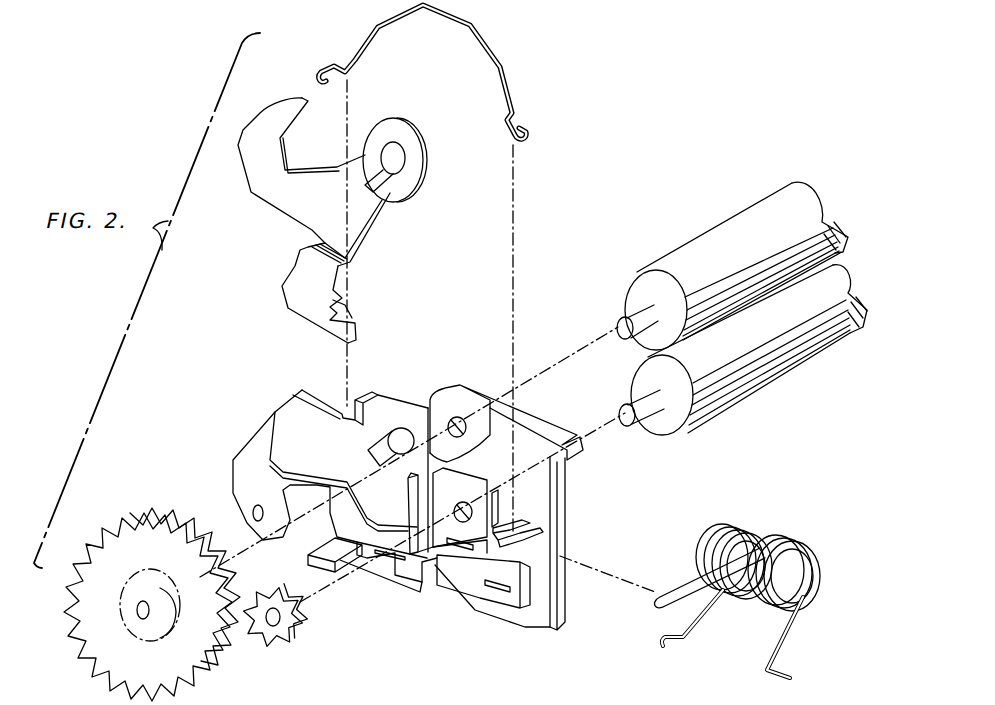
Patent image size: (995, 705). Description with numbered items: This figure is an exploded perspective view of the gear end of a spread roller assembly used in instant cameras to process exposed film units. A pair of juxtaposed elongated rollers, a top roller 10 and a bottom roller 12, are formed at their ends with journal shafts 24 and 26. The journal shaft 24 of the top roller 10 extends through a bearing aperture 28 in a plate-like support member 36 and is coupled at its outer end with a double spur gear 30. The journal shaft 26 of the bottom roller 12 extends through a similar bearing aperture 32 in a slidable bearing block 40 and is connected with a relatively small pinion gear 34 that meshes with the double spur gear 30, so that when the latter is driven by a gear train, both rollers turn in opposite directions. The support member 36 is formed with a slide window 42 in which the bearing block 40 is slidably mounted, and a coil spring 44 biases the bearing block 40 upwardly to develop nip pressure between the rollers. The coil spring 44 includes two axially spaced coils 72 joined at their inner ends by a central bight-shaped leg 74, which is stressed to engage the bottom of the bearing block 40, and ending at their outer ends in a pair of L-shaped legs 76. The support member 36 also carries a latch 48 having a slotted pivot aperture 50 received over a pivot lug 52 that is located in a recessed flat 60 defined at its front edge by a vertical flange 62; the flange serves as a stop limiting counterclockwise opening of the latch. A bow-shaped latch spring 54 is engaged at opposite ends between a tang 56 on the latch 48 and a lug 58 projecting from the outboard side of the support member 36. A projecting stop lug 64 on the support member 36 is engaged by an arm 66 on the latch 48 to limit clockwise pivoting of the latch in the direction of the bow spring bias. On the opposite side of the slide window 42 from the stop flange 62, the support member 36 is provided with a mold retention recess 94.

The top roller 10 is at (750, 230).
The bottom roller 12 is at (755, 385).
The journal shaft 24 is at (625, 316).
The journal shaft 26 is at (632, 426).
The bearing aperture 28 is at (466, 417).
The double spur gear 30 is at (190, 487).
The bearing aperture 32 is at (466, 502).
The pinion gear 34 is at (275, 645).
The support member 36 is at (523, 615).
The bearing block 40 is at (485, 480).
The slide window 42 is at (430, 400).
The coil spring 44 is at (738, 583).
The latch 48 is at (270, 162).
The slotted pivot aperture 50 is at (397, 160).
The pivot lug 52 is at (390, 395).
The bow-shaped latch spring 54 is at (460, 16).
The tang 56 is at (345, 305).
The lug 58 is at (540, 537).
The recessed flat 60 is at (335, 491).
The vertical flange 62 is at (404, 500).
The stop lug 64 is at (340, 567).
The arm 66 is at (298, 270).
The coils 72 is at (740, 532).
The bight-shaped leg 74 is at (665, 605).
The L-shaped legs 76 is at (767, 680).
The mold retention recess 94 is at (499, 497).